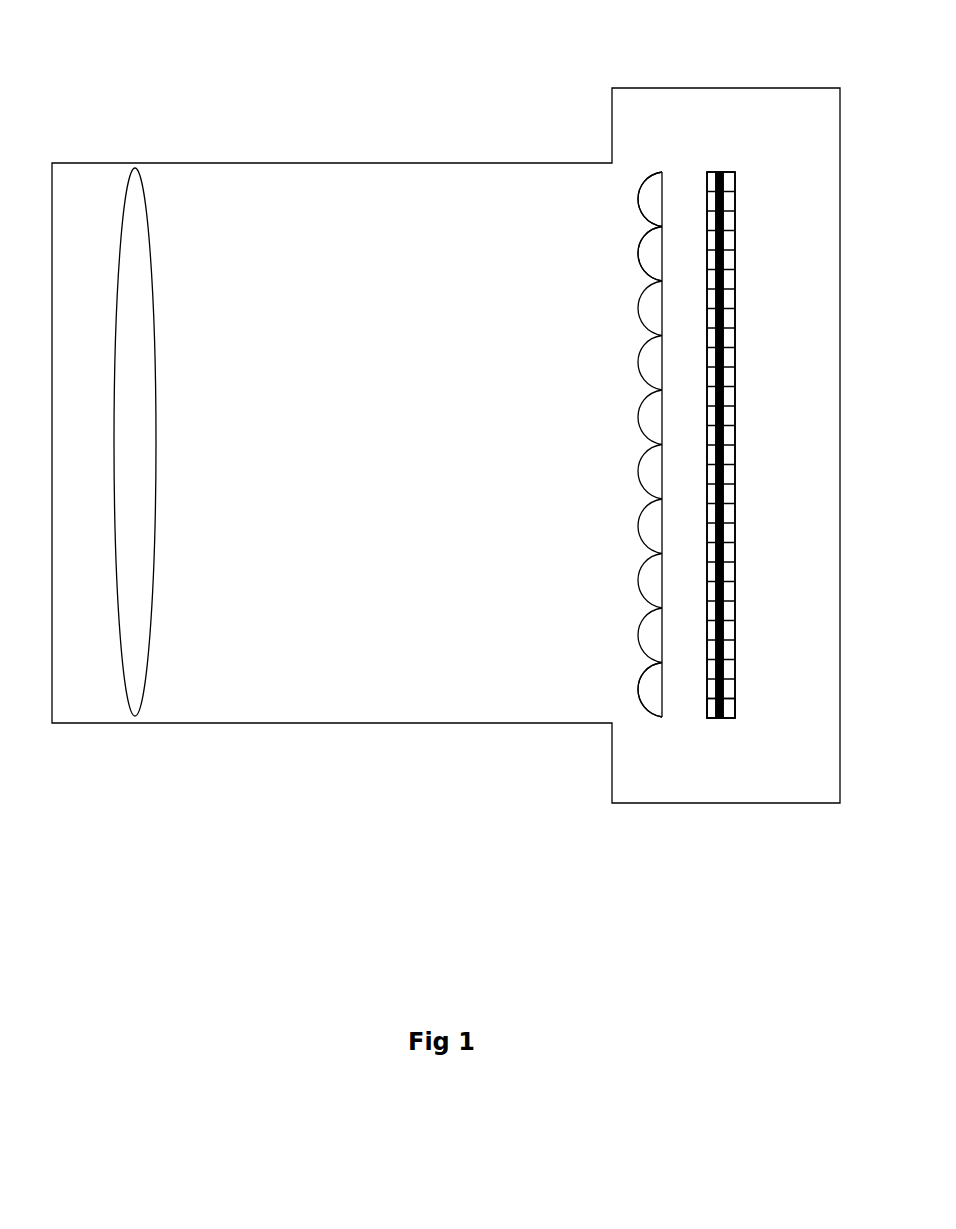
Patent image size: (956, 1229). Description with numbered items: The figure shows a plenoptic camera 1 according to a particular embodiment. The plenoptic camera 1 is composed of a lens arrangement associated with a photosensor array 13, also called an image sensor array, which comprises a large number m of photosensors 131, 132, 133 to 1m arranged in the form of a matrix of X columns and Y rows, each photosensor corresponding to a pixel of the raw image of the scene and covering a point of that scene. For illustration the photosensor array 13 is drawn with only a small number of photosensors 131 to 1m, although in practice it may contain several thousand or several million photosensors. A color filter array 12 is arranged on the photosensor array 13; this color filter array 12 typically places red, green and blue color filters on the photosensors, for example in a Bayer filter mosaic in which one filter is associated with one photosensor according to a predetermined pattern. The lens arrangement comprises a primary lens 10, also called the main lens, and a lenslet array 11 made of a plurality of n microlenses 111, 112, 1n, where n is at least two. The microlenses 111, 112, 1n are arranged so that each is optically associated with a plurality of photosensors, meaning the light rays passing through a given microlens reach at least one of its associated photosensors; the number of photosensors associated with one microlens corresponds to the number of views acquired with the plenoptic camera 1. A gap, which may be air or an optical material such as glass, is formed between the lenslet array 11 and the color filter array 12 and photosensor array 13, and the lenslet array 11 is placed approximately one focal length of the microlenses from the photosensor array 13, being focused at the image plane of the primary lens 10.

The plenoptic camera 1 is at (280, 163).
The primary lens 10 is at (155, 318).
The lenslet array 11 is at (656, 170).
The microlens 111 is at (640, 205).
The microlens 112 is at (640, 258).
The microlens 1n is at (637, 691).
The color filter array 12 is at (712, 168).
The photosensor array 13 is at (730, 166).
The photosensor 131 is at (737, 173).
The photosensor 132 is at (737, 200).
The photosensor 133 is at (737, 220).
The photosensor 1m is at (738, 714).